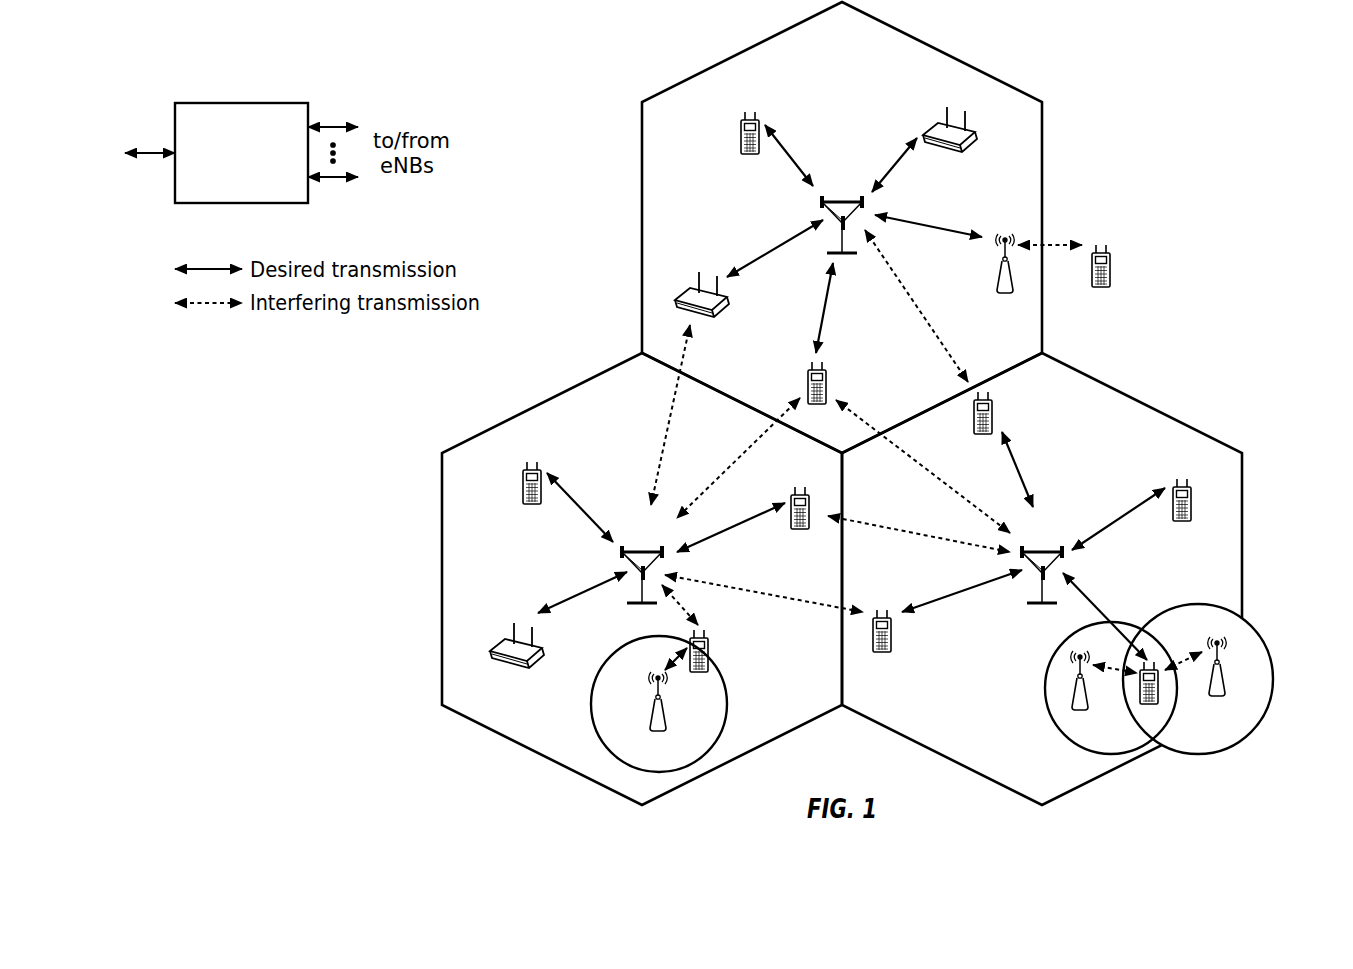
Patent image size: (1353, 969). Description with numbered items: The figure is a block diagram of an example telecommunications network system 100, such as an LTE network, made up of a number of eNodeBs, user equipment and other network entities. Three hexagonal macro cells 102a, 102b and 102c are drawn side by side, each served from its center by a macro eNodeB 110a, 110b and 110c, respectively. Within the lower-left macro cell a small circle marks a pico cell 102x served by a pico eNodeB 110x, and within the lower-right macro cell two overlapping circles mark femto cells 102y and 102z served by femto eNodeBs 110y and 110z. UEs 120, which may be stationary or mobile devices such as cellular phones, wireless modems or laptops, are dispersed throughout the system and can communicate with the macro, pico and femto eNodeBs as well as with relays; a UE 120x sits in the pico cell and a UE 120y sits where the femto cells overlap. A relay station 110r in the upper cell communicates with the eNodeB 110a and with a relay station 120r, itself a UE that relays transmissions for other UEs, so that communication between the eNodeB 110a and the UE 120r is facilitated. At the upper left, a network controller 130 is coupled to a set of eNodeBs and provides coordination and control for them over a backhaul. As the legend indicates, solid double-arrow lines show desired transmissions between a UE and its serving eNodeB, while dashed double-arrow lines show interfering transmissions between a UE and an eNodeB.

The telecommunications network system 100 is at (1178, 66).
The macro cell 102a is at (955, 37).
The macro cell 102b is at (540, 404).
The macro cell 102c is at (1145, 405).
The pico cell 102x is at (610, 655).
The femto cell 102y is at (1049, 655).
The femto cell 102z is at (1208, 590).
The macro eNodeB 110a is at (838, 198).
The macro eNodeB 110b is at (638, 548).
The macro eNodeB 110c is at (1038, 548).
The relay station 110r is at (996, 274).
The pico eNodeB 110x is at (667, 725).
The femto eNodeB 110y is at (1088, 702).
The femto eNodeB 110z is at (1224, 690).
The user equipment 120 is at (741, 126).
The relay station 120r is at (1108, 278).
The user equipment 120x is at (709, 652).
The user equipment 120y is at (1140, 703).
The network controller 130 is at (240, 103).